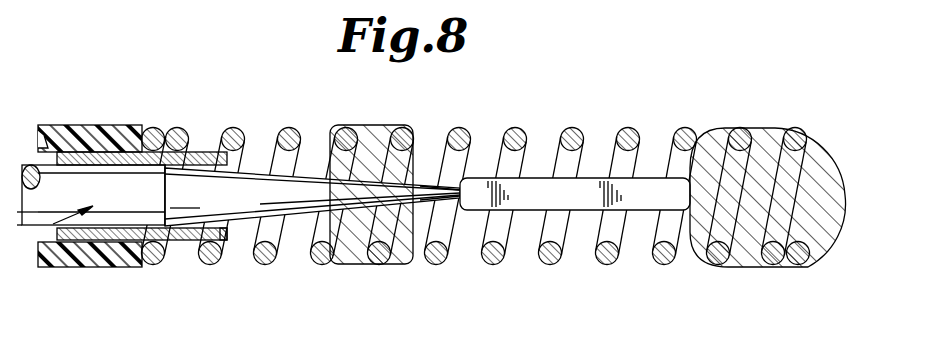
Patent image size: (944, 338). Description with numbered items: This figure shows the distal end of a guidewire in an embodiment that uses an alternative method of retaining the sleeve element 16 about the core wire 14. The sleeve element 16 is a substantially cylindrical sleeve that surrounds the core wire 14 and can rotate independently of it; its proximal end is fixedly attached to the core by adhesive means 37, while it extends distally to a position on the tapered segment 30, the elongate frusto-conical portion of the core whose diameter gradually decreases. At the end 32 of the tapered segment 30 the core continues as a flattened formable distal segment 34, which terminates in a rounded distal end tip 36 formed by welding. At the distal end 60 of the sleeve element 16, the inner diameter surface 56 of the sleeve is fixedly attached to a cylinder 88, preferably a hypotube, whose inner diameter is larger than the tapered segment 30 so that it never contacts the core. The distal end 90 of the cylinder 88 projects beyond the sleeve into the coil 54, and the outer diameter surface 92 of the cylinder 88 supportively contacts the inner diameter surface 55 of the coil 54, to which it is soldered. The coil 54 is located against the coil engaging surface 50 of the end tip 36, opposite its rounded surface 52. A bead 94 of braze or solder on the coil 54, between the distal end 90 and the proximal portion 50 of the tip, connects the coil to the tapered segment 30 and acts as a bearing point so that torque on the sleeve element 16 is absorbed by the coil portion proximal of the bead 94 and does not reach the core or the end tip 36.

The core wire 14 is at (47, 230).
The sleeve element 16 is at (112, 127).
The tapered segment 30 is at (252, 205).
The end of tapered segment 32 is at (445, 195).
The formable distal segment 34 is at (588, 187).
The distal end tip 36 is at (768, 160).
The adhesive means 37 is at (108, 262).
The coil engaging surface 50 is at (690, 245).
The rounded surface 52 is at (835, 243).
The coil 54 is at (613, 257).
The inner diameter surface of the coil 55 is at (643, 153).
The inner diameter surface of the sleeve element 56 is at (60, 127).
The distal end of the sleeve element 60 is at (143, 125).
The cylinder 88 is at (188, 240).
The distal end of the cylinder 90 is at (230, 240).
The outer diameter surface of the cylinder 92 is at (203, 166).
The bead 94 is at (373, 150).